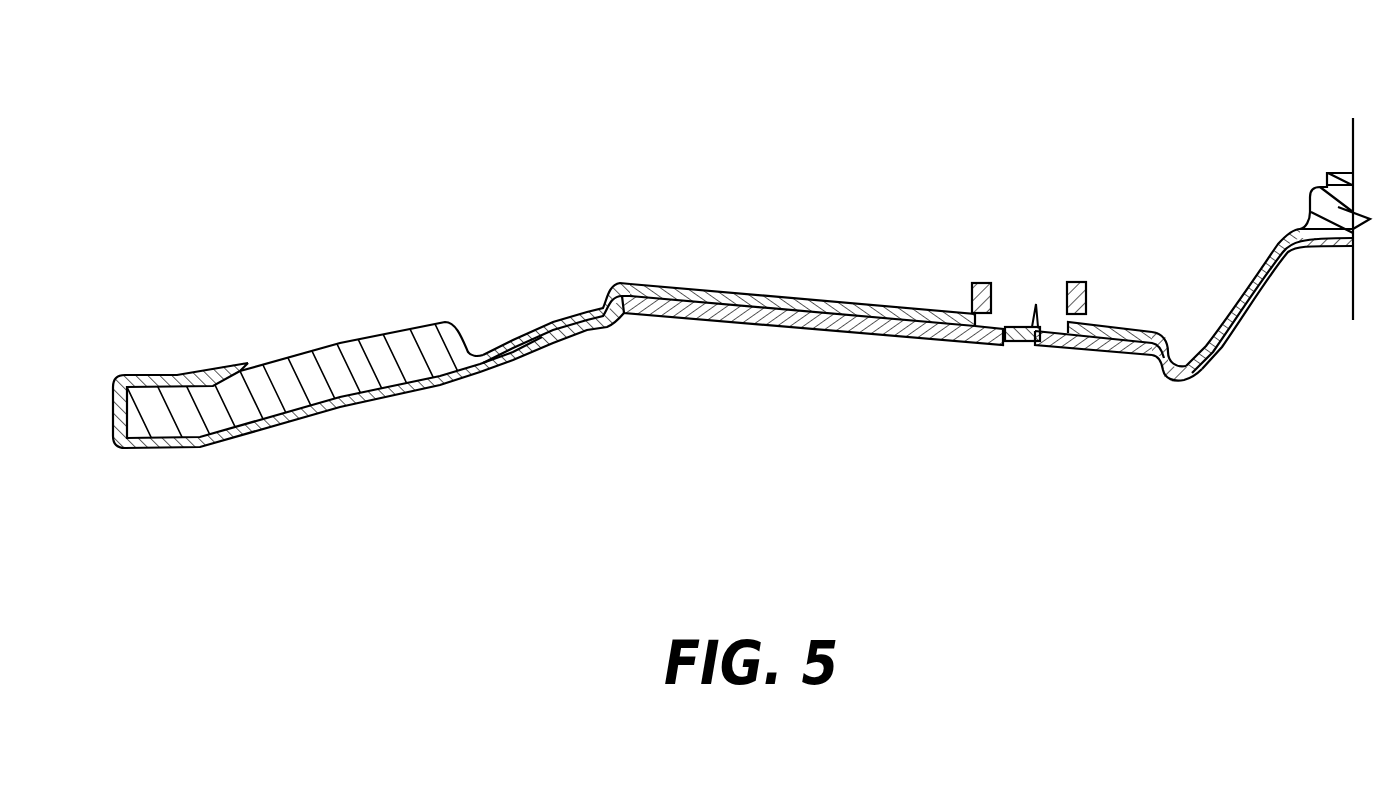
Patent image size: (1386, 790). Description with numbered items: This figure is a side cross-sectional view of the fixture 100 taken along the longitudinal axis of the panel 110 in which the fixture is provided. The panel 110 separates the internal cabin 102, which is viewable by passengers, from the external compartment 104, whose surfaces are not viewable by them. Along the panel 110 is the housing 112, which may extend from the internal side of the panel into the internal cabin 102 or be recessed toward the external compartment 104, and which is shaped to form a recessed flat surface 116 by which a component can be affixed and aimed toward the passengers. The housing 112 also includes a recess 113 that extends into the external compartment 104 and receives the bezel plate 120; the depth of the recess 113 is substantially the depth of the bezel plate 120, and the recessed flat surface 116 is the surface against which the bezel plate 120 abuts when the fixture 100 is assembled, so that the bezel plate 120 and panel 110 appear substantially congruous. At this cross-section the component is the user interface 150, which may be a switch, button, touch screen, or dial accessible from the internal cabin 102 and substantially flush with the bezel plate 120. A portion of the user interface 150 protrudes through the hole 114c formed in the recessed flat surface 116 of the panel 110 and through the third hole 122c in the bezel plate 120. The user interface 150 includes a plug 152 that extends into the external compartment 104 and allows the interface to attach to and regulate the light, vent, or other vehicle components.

The fixture 100 is at (160, 118).
The internal cabin 102 is at (245, 544).
The external compartment 104 is at (246, 248).
The panel 110 is at (392, 363).
The housing 112 is at (1222, 338).
The recess 113 is at (1143, 374).
The hole 114c is at (1003, 296).
The recessed flat surface 116 is at (660, 284).
The bezel plate 120 is at (706, 314).
The third hole 122c is at (1014, 368).
The user interface 150 is at (1018, 330).
The plug 152 is at (1082, 292).